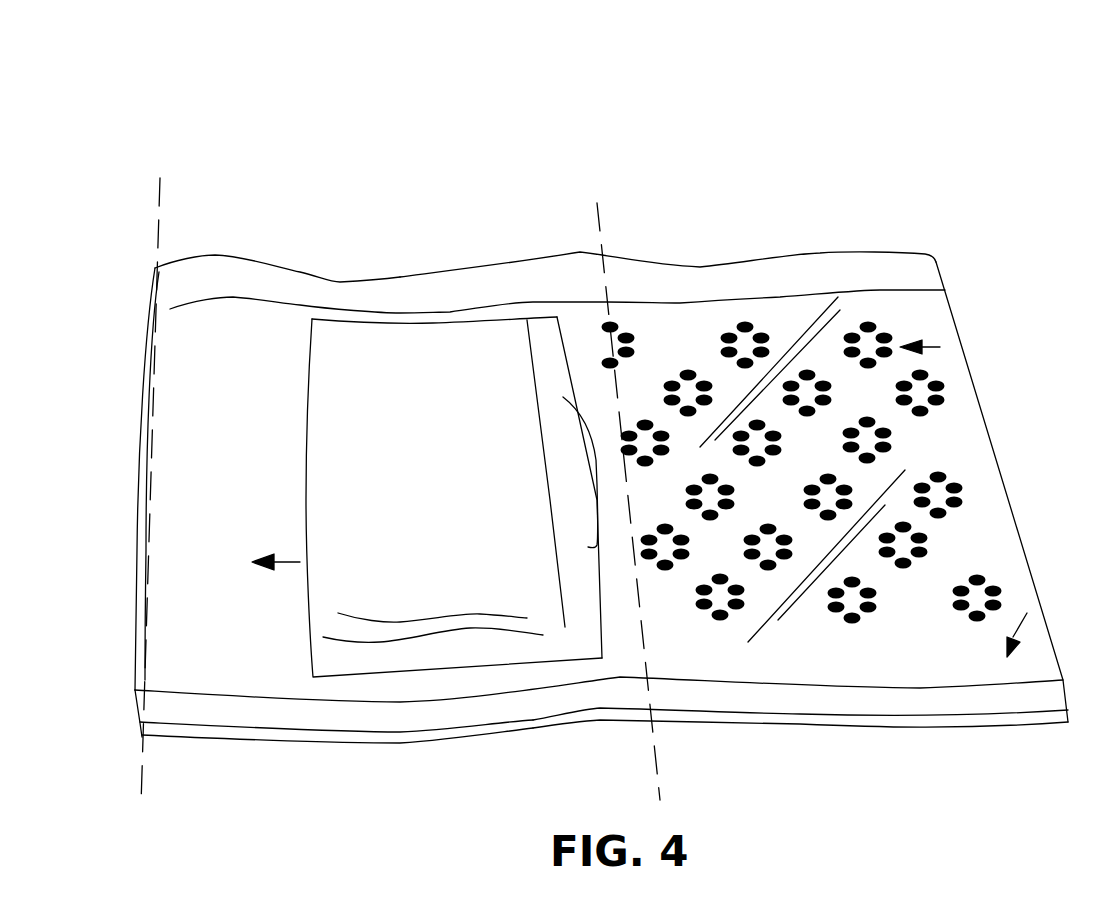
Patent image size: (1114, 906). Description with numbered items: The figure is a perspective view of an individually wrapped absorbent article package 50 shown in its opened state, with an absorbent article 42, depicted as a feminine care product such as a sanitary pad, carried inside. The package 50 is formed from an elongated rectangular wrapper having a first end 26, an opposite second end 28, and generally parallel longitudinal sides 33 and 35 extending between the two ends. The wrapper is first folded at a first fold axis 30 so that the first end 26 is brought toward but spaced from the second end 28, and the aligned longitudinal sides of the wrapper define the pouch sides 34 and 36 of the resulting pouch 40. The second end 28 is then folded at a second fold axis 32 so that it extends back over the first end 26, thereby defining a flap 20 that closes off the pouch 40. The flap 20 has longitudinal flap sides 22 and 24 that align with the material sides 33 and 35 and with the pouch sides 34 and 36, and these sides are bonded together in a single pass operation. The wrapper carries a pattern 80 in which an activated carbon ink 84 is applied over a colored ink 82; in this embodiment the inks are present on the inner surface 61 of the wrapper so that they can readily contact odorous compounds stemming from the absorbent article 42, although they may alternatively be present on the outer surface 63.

The flap 20 is at (738, 700).
The flap side 22 is at (780, 277).
The flap side 24 is at (985, 700).
The first end 26 is at (307, 498).
The second end 28 is at (997, 460).
The first fold axis 30 is at (155, 232).
The second fold axis 32 is at (600, 223).
The longitudinal side 33 is at (300, 268).
The pouch side 34 is at (325, 290).
The longitudinal side 35 is at (433, 737).
The pouch side 36 is at (193, 707).
The pouch 40 is at (300, 562).
The absorbent article 42 is at (452, 353).
The individually wrapped absorbent article package 50 is at (495, 137).
The inner surface 61 is at (1003, 550).
The outer surface 63 is at (173, 448).
The pattern 80 is at (940, 347).
The colored ink 82 is at (1027, 613).
The activated carbon ink 84 is at (943, 395).